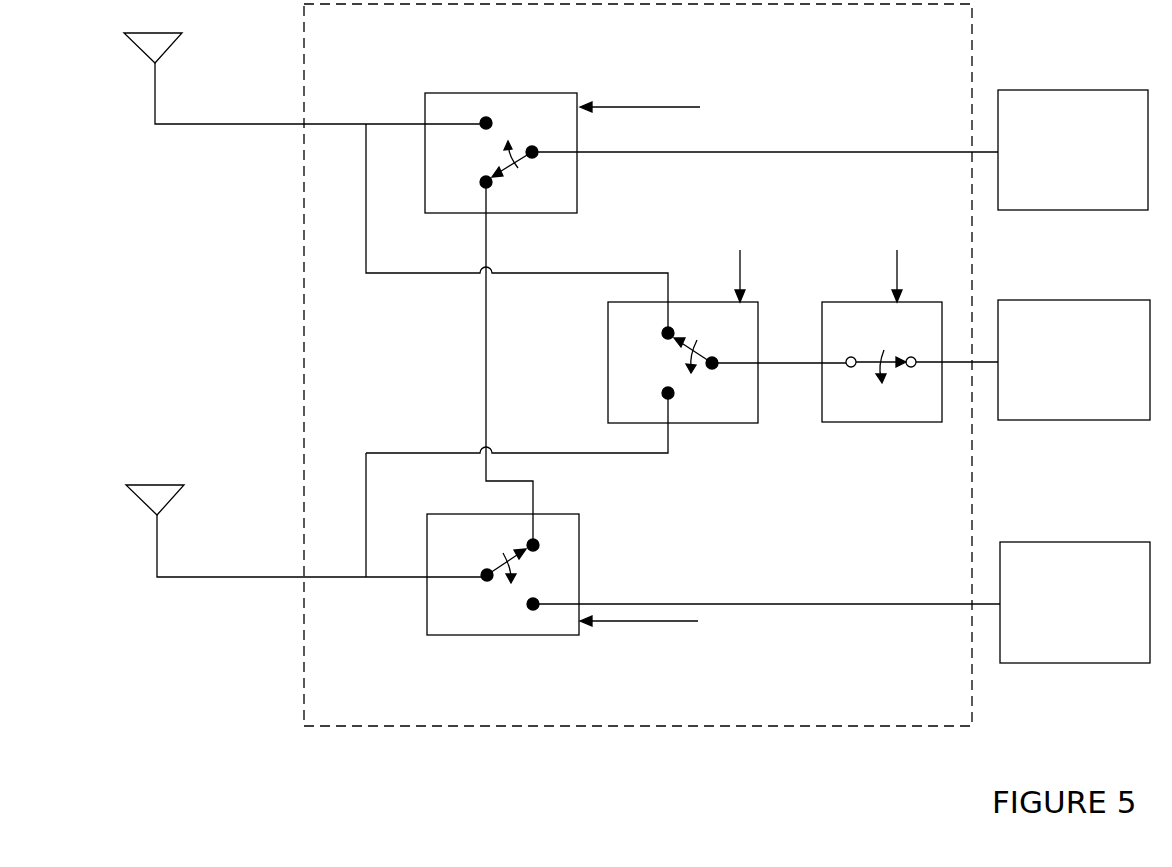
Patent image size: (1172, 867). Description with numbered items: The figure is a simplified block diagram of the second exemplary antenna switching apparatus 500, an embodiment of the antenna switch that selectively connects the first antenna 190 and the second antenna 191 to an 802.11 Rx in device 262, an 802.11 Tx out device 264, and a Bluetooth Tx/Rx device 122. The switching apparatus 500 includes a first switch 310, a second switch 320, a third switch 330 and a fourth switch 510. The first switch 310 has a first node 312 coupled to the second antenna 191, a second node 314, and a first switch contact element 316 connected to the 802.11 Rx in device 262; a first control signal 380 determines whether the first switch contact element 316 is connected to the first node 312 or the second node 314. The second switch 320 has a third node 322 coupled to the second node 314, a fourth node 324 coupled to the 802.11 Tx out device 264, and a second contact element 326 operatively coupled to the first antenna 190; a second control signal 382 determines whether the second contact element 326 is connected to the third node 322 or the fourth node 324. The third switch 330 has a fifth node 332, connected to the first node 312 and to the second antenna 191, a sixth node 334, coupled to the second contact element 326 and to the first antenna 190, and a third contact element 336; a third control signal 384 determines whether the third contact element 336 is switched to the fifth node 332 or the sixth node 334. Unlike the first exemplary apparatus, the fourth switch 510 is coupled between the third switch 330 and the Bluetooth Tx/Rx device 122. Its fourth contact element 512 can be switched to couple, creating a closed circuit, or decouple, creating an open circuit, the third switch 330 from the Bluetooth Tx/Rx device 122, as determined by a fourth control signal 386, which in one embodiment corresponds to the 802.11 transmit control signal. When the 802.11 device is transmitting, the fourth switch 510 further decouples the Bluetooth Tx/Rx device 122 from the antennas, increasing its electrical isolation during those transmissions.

The second exemplary antenna switching apparatus 500 is at (683, 726).
The second antenna 191 is at (167, 52).
The first antenna 190 is at (170, 503).
The first switch 310 is at (553, 93).
The first node 312 is at (489, 117).
The second node 314 is at (488, 190).
The first switch contact element 316 is at (534, 160).
The first control signal 380 is at (647, 107).
The 802.11 Rx in device 262 is at (1040, 210).
The Bluetooth Tx/Rx device 122 is at (1042, 420).
The 802.11 Tx out device 264 is at (1043, 663).
The third switch 330 is at (745, 423).
The fifth node 332 is at (666, 332).
The sixth node 334 is at (666, 392).
The third contact element 336 is at (713, 360).
The third control signal 384 is at (748, 285).
The fourth control signal 386 is at (900, 278).
The fourth switch 510 is at (880, 422).
The fourth contact element 512 is at (862, 357).
The second switch 320 is at (455, 635).
The third node 322 is at (536, 540).
The fourth node 324 is at (534, 598).
The second contact element 326 is at (522, 553).
The second control signal 382 is at (642, 622).